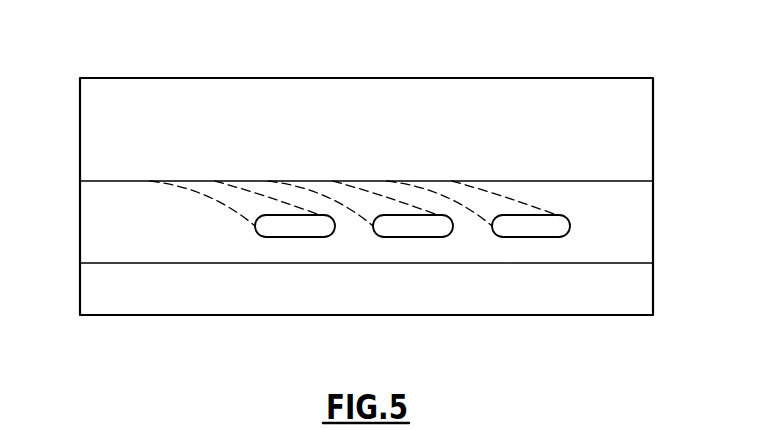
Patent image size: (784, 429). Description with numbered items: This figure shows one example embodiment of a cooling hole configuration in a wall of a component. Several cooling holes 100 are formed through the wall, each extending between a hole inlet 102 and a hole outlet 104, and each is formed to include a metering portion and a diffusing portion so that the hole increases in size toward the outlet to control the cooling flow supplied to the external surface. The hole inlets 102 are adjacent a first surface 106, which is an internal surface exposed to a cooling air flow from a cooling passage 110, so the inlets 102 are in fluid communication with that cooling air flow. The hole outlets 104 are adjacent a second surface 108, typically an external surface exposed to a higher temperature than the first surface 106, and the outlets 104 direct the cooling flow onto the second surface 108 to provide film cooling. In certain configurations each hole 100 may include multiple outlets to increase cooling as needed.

The cooling hole 100 is at (220, 205).
The hole inlet 102 is at (408, 182).
The hole outlet 104 is at (517, 237).
The first surface 106 is at (108, 181).
The second surface 108 is at (620, 221).
The cooling passage 110 is at (402, 108).